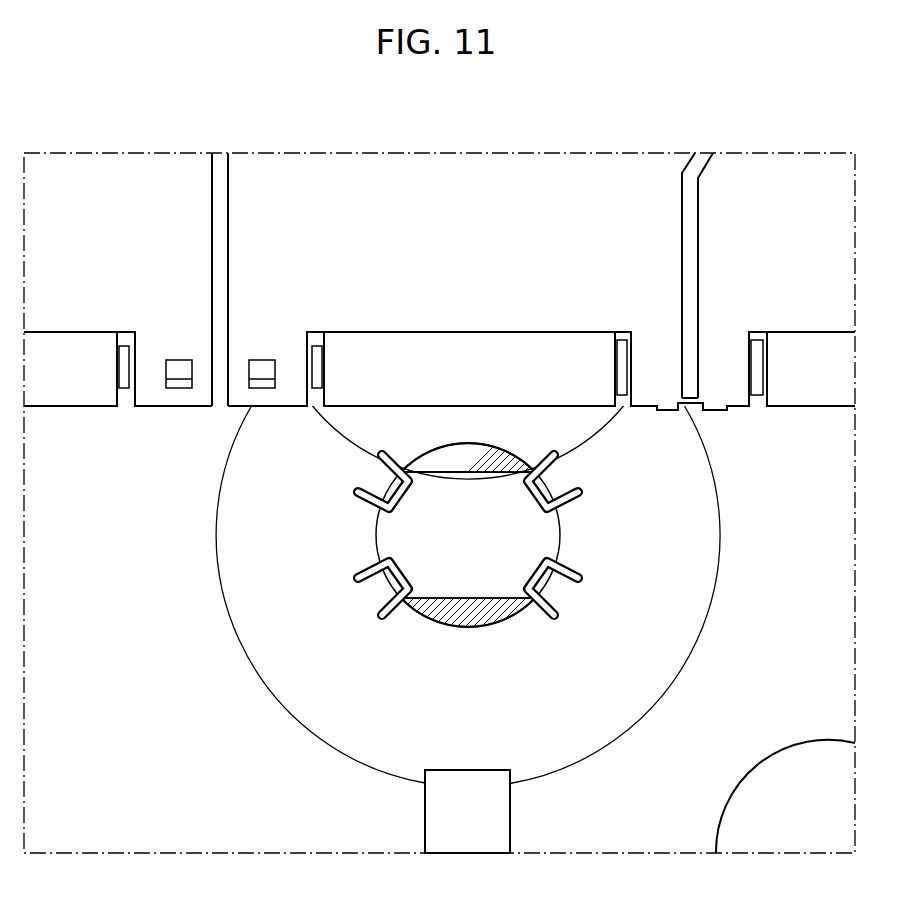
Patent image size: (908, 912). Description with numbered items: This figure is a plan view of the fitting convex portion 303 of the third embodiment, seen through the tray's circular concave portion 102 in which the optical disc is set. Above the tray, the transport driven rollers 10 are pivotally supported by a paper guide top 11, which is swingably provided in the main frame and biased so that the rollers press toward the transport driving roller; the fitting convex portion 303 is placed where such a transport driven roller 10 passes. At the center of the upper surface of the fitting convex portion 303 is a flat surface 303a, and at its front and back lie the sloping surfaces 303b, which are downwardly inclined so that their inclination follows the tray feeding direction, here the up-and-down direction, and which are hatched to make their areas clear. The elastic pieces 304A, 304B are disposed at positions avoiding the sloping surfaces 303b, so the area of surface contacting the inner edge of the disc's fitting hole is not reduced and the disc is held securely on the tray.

The transport driven roller 10 is at (52, 352).
The paper guide top 11 is at (75, 202).
The concave portion 102 is at (62, 621).
The fitting convex portion 303 is at (486, 628).
The flat surface 303a is at (450, 573).
The sloping surface 303b is at (480, 443).
The elastic piece 304A is at (552, 462).
The elastic piece 304B is at (402, 487).